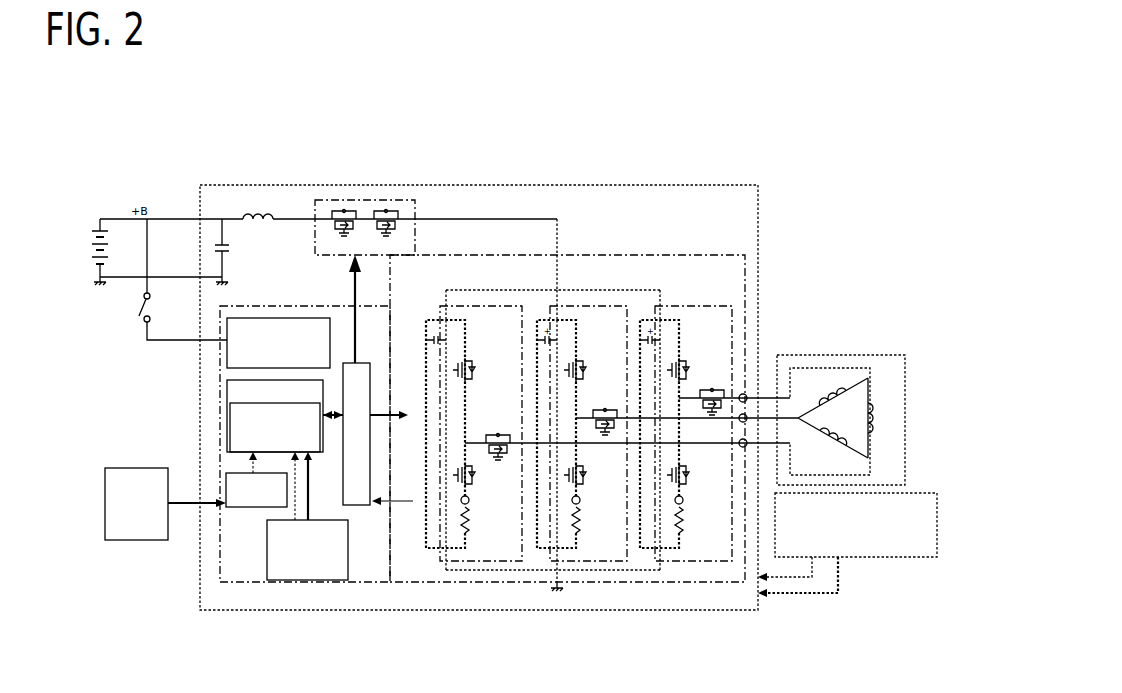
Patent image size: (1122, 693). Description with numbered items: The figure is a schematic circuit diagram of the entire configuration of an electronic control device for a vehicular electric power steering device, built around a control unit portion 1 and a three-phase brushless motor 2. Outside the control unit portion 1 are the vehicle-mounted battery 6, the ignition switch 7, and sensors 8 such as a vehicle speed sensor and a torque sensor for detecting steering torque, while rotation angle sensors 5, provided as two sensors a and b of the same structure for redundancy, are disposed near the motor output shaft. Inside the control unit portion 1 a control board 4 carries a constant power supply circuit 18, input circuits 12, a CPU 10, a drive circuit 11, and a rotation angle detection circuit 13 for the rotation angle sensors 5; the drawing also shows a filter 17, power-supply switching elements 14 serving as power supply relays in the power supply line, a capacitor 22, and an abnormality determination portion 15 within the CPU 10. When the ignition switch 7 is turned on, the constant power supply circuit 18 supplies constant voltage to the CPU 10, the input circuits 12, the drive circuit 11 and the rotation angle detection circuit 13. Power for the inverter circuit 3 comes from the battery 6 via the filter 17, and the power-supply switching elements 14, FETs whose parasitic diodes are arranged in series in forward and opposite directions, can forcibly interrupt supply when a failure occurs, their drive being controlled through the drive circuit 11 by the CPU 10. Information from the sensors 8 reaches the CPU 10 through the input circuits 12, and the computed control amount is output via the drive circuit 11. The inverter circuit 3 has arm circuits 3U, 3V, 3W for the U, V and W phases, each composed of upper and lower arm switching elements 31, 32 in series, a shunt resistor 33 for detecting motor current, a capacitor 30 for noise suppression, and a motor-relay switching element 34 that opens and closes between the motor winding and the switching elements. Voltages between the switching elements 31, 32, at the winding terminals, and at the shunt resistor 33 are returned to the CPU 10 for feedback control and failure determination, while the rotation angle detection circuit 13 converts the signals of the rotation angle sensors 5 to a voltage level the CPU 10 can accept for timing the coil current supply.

The control unit portion 1 is at (750, 185).
The motor 2 is at (867, 354).
The inverter circuit 3 is at (632, 583).
The arm circuit 3U is at (472, 561).
The arm circuit 3V is at (567, 561).
The arm circuit 3W is at (680, 561).
The control board 4 is at (222, 543).
The rotation angle sensors 5 is at (860, 558).
The battery 6 is at (97, 222).
The ignition switch 7 is at (133, 316).
The sensors 8 is at (122, 541).
The CPU 10 is at (227, 404).
The drive circuit 11 is at (356, 506).
The input circuits 12 is at (233, 508).
The rotation angle detection circuit 13 is at (292, 581).
The power-supply switching elements 14 is at (356, 200).
The abnormality determination unit 15 is at (228, 432).
The filter 17 is at (264, 205).
The constant power supply circuit 18 is at (227, 352).
The capacitor 22 is at (222, 252).
The capacitor 30 is at (424, 340).
The switching element 31 is at (472, 355).
The switching element 32 is at (476, 482).
The shunt resistor 33 is at (470, 522).
The motor-relay switching element 34 is at (498, 436).